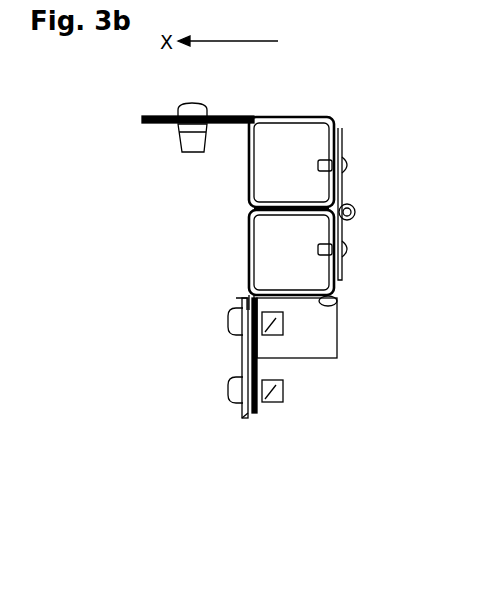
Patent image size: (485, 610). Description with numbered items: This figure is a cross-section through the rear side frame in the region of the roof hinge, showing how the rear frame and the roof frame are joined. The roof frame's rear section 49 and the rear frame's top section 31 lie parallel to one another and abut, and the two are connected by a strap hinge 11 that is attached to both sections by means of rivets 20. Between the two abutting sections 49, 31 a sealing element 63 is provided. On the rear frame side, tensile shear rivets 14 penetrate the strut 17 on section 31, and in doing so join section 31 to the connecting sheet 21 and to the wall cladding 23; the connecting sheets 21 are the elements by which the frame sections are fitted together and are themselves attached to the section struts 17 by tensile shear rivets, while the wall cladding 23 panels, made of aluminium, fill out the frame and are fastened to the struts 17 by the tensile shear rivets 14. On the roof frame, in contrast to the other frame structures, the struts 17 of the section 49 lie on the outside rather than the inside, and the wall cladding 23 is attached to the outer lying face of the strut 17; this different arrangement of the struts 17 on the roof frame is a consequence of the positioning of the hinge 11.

The strap hinge 11 is at (342, 281).
The tensile shear rivets 14 is at (190, 103).
The strut 17 is at (142, 118).
The rivets 20 is at (350, 163).
The connecting sheet 21 is at (242, 302).
The wall cladding 23 is at (247, 117).
The top frame section 31 is at (337, 303).
The rear section 49 is at (312, 118).
The sealing element 63 is at (250, 210).